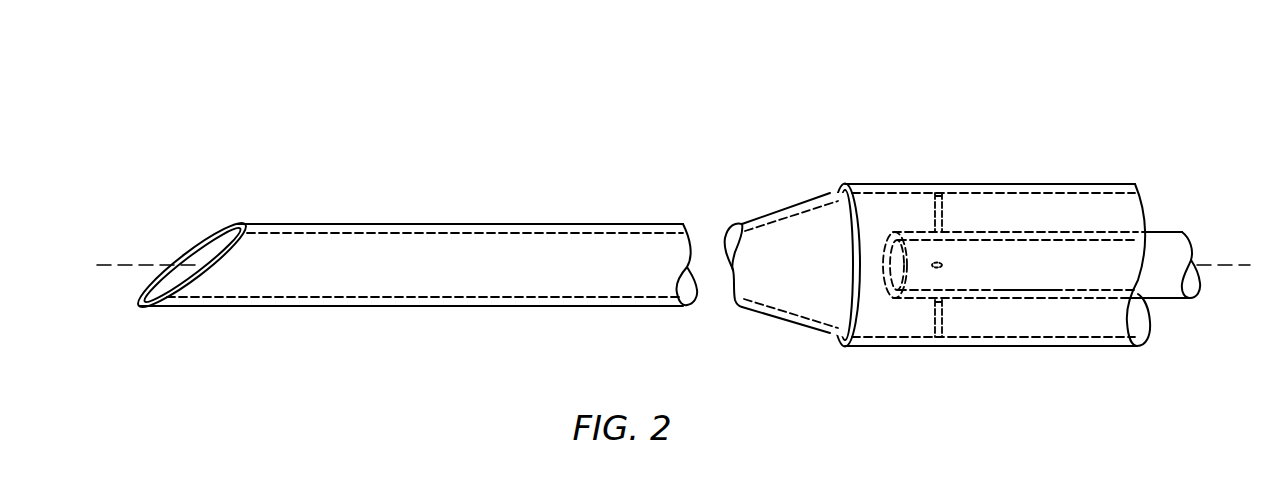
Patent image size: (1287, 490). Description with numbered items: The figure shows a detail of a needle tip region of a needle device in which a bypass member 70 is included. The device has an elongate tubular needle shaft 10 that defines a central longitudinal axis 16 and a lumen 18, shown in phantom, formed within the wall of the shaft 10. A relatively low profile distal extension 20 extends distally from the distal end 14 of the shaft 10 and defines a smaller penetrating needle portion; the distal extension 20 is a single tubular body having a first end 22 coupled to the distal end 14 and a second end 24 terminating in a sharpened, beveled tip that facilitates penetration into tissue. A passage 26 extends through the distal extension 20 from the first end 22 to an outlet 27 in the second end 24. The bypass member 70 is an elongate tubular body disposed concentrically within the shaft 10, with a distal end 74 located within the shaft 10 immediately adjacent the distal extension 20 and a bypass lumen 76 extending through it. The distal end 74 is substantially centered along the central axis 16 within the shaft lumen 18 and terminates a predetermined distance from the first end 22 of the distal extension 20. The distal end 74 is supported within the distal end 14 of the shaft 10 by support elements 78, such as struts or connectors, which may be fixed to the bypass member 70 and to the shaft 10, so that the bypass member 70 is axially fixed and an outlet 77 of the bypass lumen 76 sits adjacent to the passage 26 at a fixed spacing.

The needle shaft 10 is at (1044, 116).
The distal end 14 is at (895, 184).
The central longitudinal axis 16 is at (140, 265).
The lumen 18 is at (1012, 194).
The distal extension 20 is at (477, 199).
The first end 22 is at (761, 218).
The second end 24 is at (170, 308).
The passage 26 is at (274, 293).
The outlet 27 is at (227, 240).
The bypass member 70 is at (1161, 307).
The distal end 74 is at (912, 303).
The bypass lumen 76 is at (1042, 290).
The outlet 77 is at (884, 243).
The support elements 78 is at (940, 318).